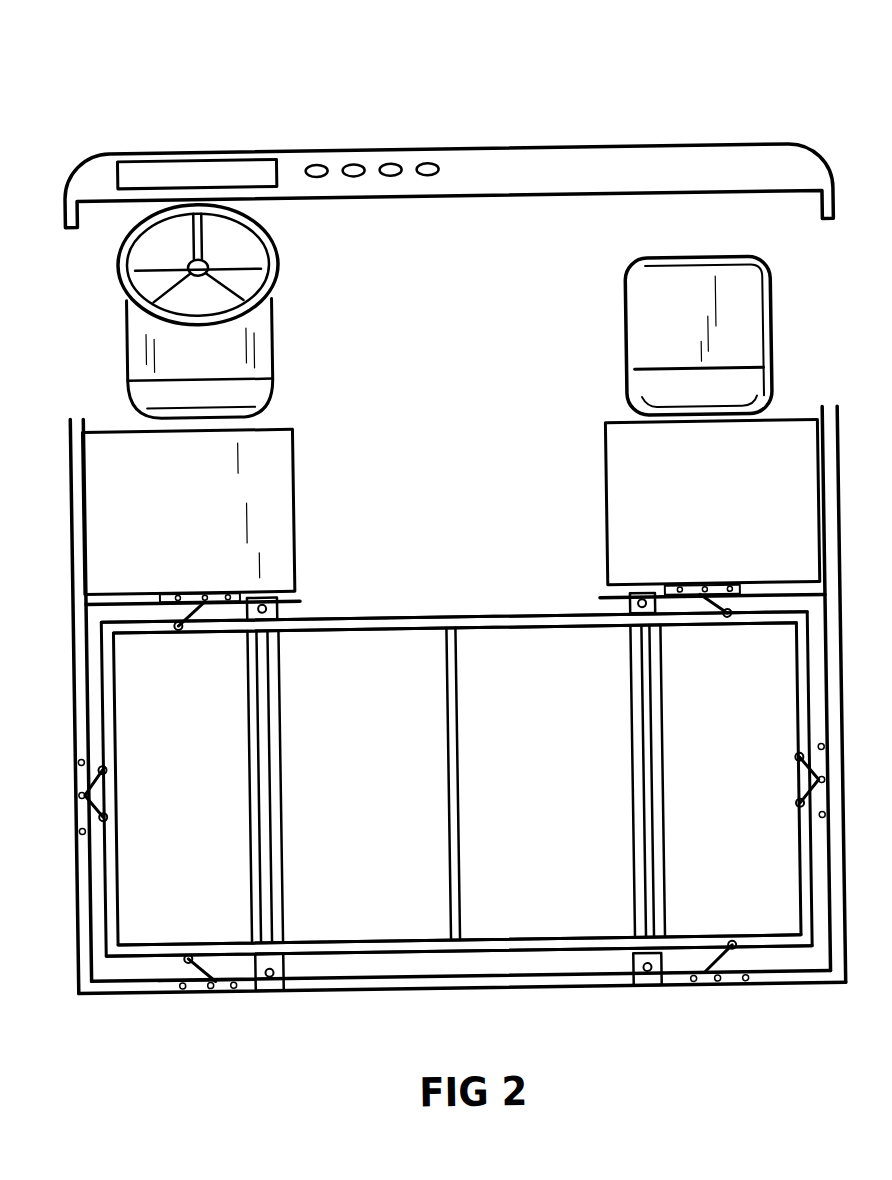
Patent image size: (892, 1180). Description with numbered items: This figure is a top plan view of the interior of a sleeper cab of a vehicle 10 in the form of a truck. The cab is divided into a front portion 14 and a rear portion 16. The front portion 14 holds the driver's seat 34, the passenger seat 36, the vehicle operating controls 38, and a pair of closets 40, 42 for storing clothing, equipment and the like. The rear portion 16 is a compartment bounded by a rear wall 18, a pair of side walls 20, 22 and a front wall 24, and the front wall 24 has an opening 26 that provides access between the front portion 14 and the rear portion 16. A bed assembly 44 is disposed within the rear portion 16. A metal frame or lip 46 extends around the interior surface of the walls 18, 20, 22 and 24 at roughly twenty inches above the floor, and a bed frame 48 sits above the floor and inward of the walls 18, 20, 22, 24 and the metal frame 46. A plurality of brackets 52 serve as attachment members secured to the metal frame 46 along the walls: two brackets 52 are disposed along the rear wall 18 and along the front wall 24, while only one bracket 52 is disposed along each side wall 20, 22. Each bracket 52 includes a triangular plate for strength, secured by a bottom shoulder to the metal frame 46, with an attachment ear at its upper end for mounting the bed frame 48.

The vehicle 10 is at (712, 122).
The front portion 14 is at (84, 300).
The rear portion 16 is at (848, 660).
The rear wall 18 is at (603, 990).
The side wall 20 is at (842, 708).
The side wall 22 is at (72, 678).
The front wall 24 is at (612, 601).
The opening 26 is at (405, 580).
The driver's seat 34 is at (255, 358).
The passenger seat 36 is at (757, 266).
The vehicle operating controls 38 is at (292, 170).
The closet 40 is at (272, 472).
The closet 42 is at (633, 478).
The bed assembly 44 is at (398, 888).
The metal frame 46 is at (92, 990).
The bed frame 48 is at (154, 990).
The bracket 52 is at (693, 618).